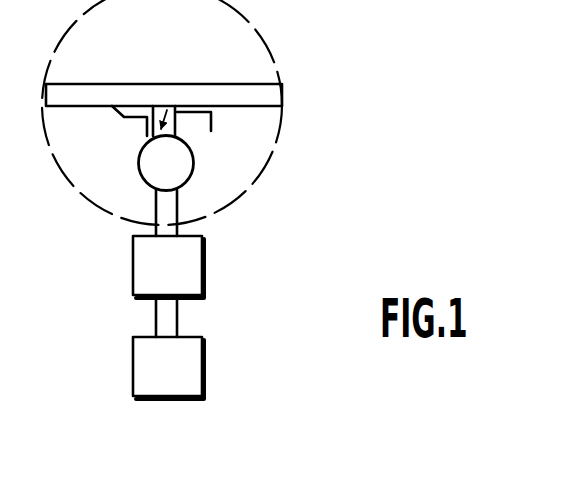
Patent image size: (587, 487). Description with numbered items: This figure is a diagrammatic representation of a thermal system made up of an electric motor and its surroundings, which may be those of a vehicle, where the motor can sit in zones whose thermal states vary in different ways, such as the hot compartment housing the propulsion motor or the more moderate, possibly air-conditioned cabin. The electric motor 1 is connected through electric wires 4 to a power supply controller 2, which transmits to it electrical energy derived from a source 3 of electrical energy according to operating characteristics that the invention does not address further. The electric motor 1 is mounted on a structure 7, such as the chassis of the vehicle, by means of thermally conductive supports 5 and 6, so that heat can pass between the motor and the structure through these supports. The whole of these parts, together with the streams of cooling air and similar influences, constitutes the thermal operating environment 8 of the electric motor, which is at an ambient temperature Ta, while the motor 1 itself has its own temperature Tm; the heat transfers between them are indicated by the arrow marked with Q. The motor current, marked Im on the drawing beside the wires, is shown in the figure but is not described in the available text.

The electric motor 1 is at (192, 154).
The power supply controller 2 is at (203, 270).
The source of electrical energy 3 is at (205, 373).
The electric wires 4 is at (186, 208).
The thermally conductive support 5 is at (212, 127).
The thermally conductive support 6 is at (117, 118).
The structure 7 is at (275, 98).
The environment 8 is at (267, 159).
The ambient temperature Ta is at (268, 44).
The motor temperature Tm is at (146, 138).
The motor current Im is at (168, 202).